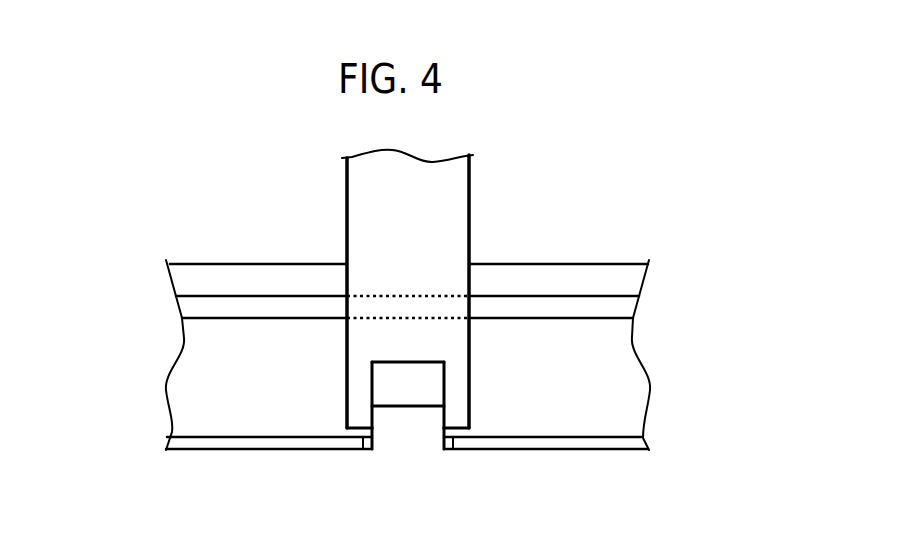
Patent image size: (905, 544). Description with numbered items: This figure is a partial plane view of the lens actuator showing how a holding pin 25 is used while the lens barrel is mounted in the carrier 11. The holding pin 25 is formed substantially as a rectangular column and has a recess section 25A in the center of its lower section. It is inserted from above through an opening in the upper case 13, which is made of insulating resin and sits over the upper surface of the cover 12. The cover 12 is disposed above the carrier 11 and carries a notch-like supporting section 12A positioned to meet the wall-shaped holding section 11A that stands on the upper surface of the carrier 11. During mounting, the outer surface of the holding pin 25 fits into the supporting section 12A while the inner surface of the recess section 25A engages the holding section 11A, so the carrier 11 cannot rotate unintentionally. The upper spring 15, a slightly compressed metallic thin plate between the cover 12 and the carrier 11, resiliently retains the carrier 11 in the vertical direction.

The carrier 11 is at (573, 463).
The holding section 11A is at (407, 432).
The cover 12 is at (202, 305).
The supporting section 12A is at (363, 307).
The upper case 13 is at (622, 283).
The upper spring 15 is at (627, 445).
The holding pin 25 is at (450, 218).
The recess section 25A is at (420, 385).